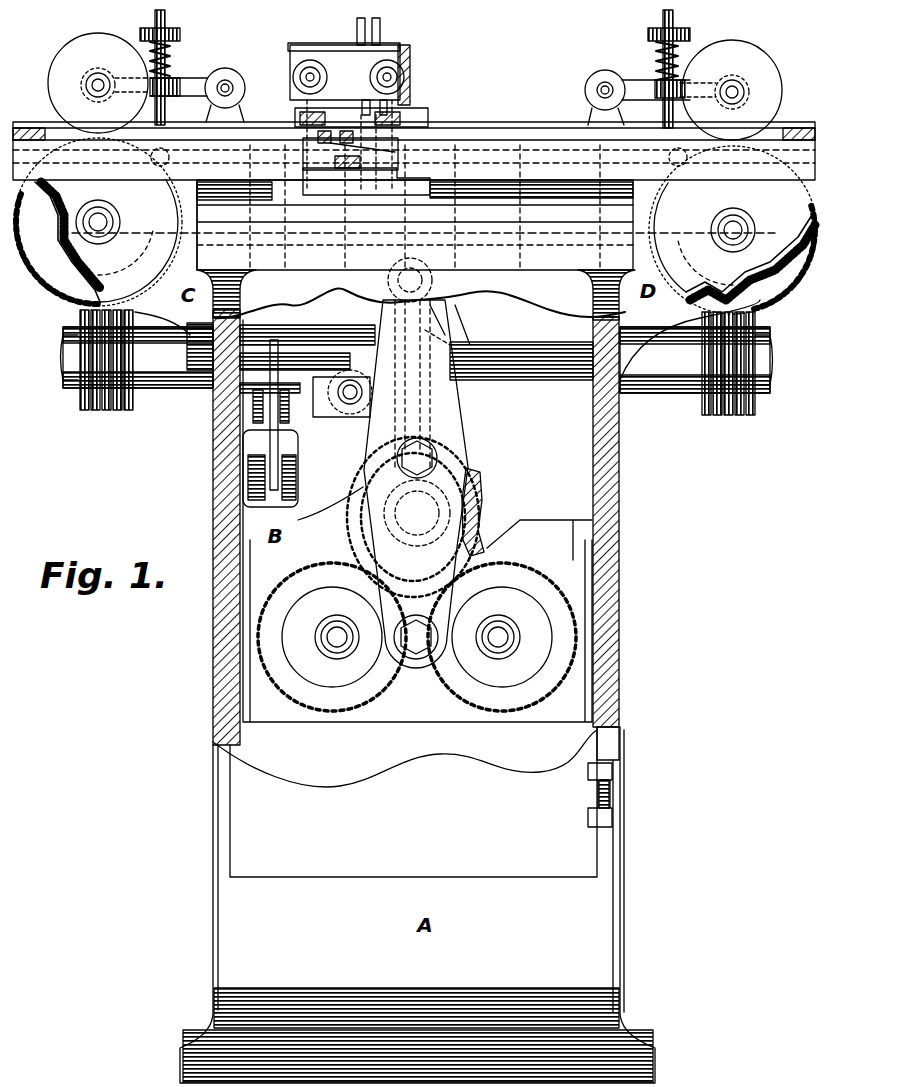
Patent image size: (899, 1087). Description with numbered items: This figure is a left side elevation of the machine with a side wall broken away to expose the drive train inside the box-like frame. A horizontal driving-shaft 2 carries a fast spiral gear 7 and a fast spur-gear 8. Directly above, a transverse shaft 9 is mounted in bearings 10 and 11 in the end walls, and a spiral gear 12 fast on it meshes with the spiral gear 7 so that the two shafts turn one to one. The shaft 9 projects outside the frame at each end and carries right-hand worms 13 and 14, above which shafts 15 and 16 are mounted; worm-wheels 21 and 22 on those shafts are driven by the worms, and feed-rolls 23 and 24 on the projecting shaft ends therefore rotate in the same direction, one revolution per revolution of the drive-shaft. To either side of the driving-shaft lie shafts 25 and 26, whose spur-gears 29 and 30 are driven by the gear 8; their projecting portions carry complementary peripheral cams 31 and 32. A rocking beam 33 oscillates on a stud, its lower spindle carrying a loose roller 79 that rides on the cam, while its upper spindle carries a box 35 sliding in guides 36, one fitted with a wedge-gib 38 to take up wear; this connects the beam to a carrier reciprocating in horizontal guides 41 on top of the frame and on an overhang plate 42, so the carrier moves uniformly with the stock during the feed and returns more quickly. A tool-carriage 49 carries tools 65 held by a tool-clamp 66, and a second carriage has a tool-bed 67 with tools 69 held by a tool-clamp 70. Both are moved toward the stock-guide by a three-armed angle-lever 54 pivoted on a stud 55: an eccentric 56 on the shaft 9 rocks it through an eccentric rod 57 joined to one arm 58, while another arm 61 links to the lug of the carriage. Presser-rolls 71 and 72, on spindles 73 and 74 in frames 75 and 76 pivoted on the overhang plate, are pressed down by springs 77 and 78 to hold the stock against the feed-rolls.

The driving-shaft 2 is at (413, 517).
The spiral gear 7 is at (478, 518).
The spur-gear 8 is at (470, 469).
The shaft 9 is at (538, 384).
The bearing 10 is at (186, 388).
The bearing 11 is at (640, 392).
The spiral gear 12 is at (452, 422).
The worm 13 is at (108, 412).
The worm 14 is at (726, 414).
The shaft 15 is at (92, 232).
The shaft 16 is at (742, 242).
The worm-wheel 21 is at (58, 249).
The worm-wheel 22 is at (770, 268).
The feed-roll 23 is at (98, 222).
The feed-roll 24 is at (733, 230).
The shaft 25 is at (330, 633).
The shaft 26 is at (505, 633).
The spur-gear 29 is at (314, 548).
The spur-gear 30 is at (520, 550).
The peripheral cam 31 is at (332, 637).
The peripheral cam 32 is at (502, 637).
The rocking beam 33 is at (447, 406).
The box 35 is at (432, 324).
The guides 36 is at (447, 331).
The wedge-gib 38 is at (460, 303).
The horizontal guides 41 is at (198, 235).
The overhang plate 42 is at (414, 151).
The tool-carriage 49 is at (366, 181).
The three-armed angle-lever 54 is at (312, 408).
The stud 55 is at (190, 348).
The eccentric 56 is at (255, 413).
The eccentric rod 57 is at (290, 460).
The arm 58 is at (265, 435).
The arm 61 is at (350, 298).
The tools 65 is at (360, 152).
The tool-clamp 66 is at (402, 127).
The tool-bed 67 is at (325, 53).
The tools 69 is at (378, 37).
The tool-clamp 70 is at (348, 77).
The presser-roll 71 is at (99, 83).
The presser-roll 72 is at (731, 90).
The spindle 73 is at (100, 88).
The spindle 74 is at (733, 95).
The frame 75 is at (190, 86).
The frame 76 is at (640, 88).
The spring 77 is at (168, 53).
The spring 78 is at (680, 58).
The loose roller 79 is at (416, 662).